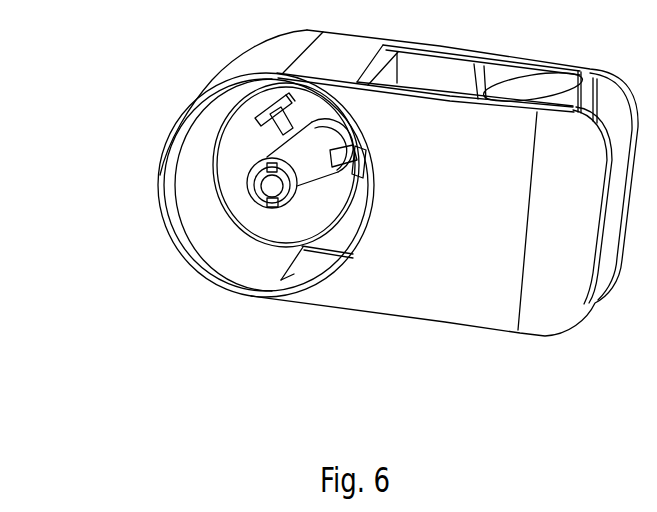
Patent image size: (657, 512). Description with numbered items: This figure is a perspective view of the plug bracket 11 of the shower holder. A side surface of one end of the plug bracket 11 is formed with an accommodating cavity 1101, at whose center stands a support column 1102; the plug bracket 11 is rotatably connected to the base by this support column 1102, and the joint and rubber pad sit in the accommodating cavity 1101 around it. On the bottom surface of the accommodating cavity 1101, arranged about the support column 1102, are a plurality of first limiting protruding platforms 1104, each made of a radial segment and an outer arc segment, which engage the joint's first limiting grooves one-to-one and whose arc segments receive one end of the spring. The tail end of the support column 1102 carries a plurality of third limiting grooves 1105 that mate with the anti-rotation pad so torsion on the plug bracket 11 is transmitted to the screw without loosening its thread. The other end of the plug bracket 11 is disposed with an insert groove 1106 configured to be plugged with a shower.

The plug bracket 11 is at (430, 288).
The accommodating cavity 1101 is at (253, 262).
The support column 1102 is at (260, 160).
The first limiting protruding platforms 1104 is at (260, 108).
The third limiting grooves 1105 is at (262, 204).
The insert groove 1106 is at (548, 100).